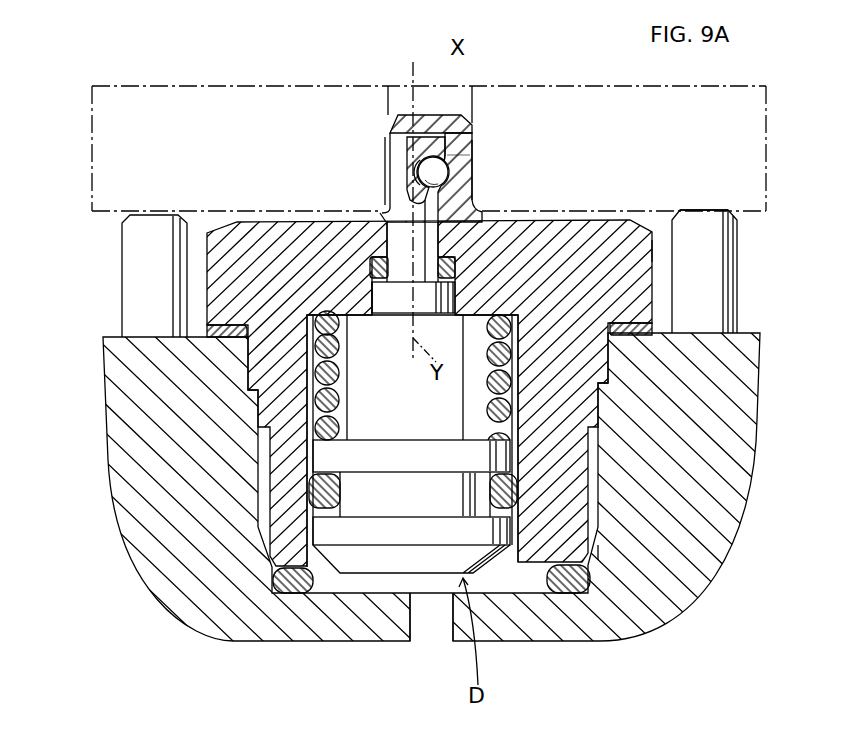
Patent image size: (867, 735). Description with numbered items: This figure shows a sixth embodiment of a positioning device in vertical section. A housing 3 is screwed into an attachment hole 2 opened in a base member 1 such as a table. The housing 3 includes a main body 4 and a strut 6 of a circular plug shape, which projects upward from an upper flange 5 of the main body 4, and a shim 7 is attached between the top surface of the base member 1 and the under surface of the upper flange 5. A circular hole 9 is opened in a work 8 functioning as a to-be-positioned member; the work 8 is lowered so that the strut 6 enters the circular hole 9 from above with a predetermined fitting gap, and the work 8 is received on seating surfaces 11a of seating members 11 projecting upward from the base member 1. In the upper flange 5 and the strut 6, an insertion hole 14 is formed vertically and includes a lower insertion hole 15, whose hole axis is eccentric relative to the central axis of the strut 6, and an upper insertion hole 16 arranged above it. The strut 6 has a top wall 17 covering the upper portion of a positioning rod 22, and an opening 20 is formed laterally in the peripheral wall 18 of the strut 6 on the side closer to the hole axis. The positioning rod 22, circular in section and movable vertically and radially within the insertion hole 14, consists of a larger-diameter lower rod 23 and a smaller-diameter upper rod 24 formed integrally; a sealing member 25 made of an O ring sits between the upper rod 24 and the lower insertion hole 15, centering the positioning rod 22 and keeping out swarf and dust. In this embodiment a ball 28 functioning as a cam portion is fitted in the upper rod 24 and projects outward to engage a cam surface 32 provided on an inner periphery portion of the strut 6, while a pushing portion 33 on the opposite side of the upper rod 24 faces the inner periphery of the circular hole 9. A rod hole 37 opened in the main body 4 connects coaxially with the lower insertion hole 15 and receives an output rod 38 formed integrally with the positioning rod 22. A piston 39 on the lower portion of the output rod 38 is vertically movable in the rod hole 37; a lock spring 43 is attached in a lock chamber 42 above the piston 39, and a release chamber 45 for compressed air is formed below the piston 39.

The base member 1 is at (705, 552).
The attachment hole 2 is at (600, 550).
The housing 3 is at (662, 287).
The main body 4 is at (533, 562).
The upper flange 5 is at (660, 254).
The strut 6 is at (485, 156).
The shim 7 is at (653, 329).
The work 8 is at (188, 86).
The circular hole 9 is at (385, 84).
The seating member 11 is at (740, 270).
The seating surface 11a is at (700, 211).
The insertion hole 14 is at (378, 320).
The lower insertion hole 15 is at (380, 302).
The upper insertion hole 16 is at (382, 213).
The top wall 17 is at (397, 120).
The peripheral wall 18 is at (462, 167).
The opening 20 is at (388, 137).
The positioning rod 22 is at (384, 186).
The lower rod 23 is at (410, 320).
The upper rod 24 is at (405, 156).
The sealing member 25 is at (435, 297).
The ball 28 is at (447, 158).
The cam surface 32 is at (448, 180).
The pushing portion 33 is at (389, 174).
The rod hole 37 is at (312, 452).
The output rod 38 is at (390, 584).
The piston 39 is at (413, 466).
The lock chamber 42 is at (340, 396).
The lock spring 43 is at (342, 427).
The release chamber 45 is at (335, 597).